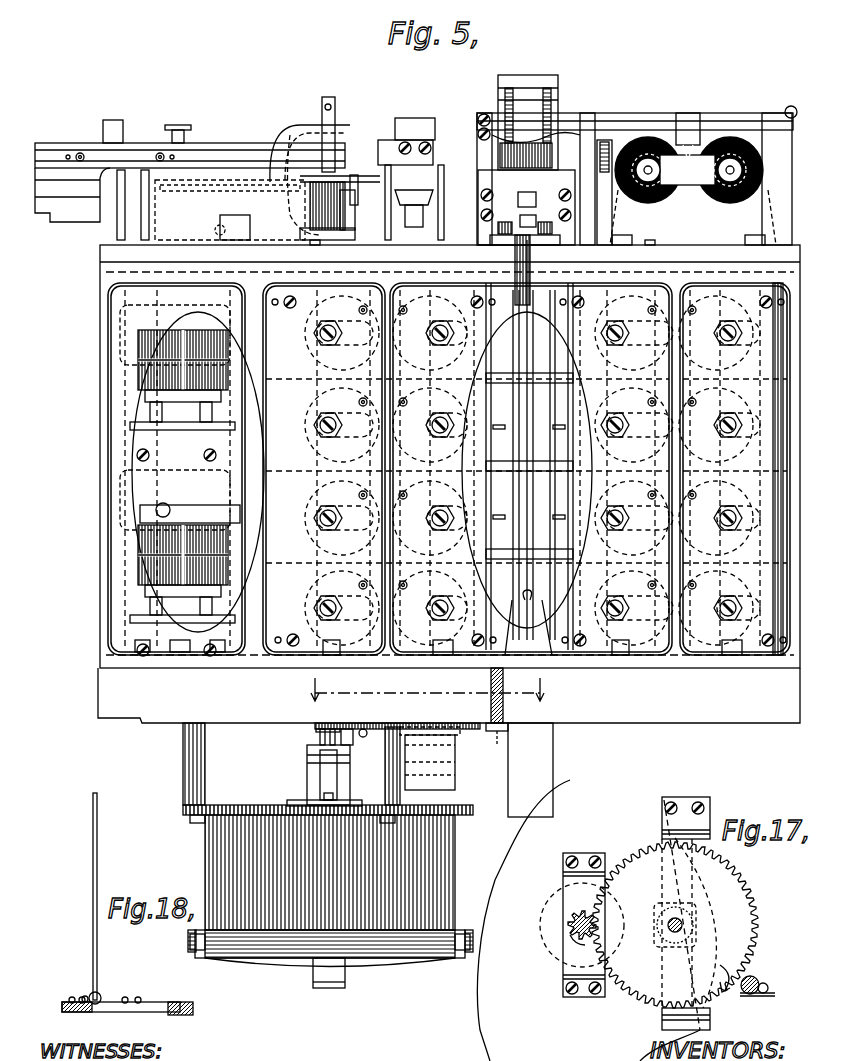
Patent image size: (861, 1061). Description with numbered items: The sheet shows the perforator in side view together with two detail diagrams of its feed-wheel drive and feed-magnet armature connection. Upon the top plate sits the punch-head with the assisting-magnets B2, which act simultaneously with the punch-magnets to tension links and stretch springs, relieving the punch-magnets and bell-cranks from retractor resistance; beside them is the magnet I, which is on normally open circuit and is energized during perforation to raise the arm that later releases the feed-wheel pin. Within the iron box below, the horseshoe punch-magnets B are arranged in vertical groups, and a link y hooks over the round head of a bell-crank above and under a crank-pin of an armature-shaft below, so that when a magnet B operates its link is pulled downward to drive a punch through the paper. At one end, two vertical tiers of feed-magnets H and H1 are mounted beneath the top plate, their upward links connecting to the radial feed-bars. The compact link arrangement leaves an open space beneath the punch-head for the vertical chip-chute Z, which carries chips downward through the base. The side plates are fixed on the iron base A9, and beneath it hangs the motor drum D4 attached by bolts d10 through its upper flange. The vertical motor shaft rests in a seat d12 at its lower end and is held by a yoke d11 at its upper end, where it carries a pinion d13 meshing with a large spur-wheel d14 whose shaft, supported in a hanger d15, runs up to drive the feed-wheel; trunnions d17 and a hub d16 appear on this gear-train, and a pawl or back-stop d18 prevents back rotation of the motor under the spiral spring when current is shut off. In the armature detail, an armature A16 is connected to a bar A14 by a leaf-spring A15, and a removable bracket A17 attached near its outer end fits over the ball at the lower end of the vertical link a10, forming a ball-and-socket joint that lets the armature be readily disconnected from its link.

In FIG. 5, the punch-magnet B is at (532, 470).
In FIG. 5, the assisting-magnet B2 is at (690, 188).
In FIG. 5, the feed-magnet tier H is at (138, 374).
In FIG. 5, the feed-magnet tier H1 is at (140, 545).
In FIG. 5, the magnet I is at (308, 205).
In FIG. 5, the link y is at (512, 263).
In FIG. 5, the iron base A9 is at (449, 695).
In FIG. 5, the bolt d10 is at (385, 775).
In FIG. 5, the yoke d11 is at (307, 780).
In FIG. 17, the yoke d11 is at (563, 983).
In FIG. 5, the seat d12 is at (345, 982).
In FIG. 5, the pinion d13 is at (315, 730).
In FIG. 17, the pinion d13 is at (568, 925).
In FIG. 5, the spur-wheel d14 is at (365, 712).
In FIG. 17, the spur-wheel d14 is at (640, 868).
In FIG. 5, the hanger d15 is at (455, 767).
In FIG. 17, the hanger d15 is at (690, 870).
In FIG. 17, the hub d16 is at (705, 925).
In FIG. 5, the trunnion d17 is at (455, 950).
In FIG. 5, the pawl or back-stop d18 is at (488, 722).
In FIG. 17, the pawl or back-stop d18 is at (745, 995).
In FIG. 5, the chip-chute Z is at (535, 748).
In FIG. 5, the drum D4 is at (328, 886).
In FIG. 17, the drum D4 is at (579, 1031).
In FIG. 5, the rod a10 is at (98, 858).
In FIG. 18, the bar A14 is at (193, 1012).
In FIG. 18, the leaf-spring A15 is at (150, 1012).
In FIG. 18, the armature A16 is at (108, 1000).
In FIG. 18, the removable bracket A17 is at (80, 998).